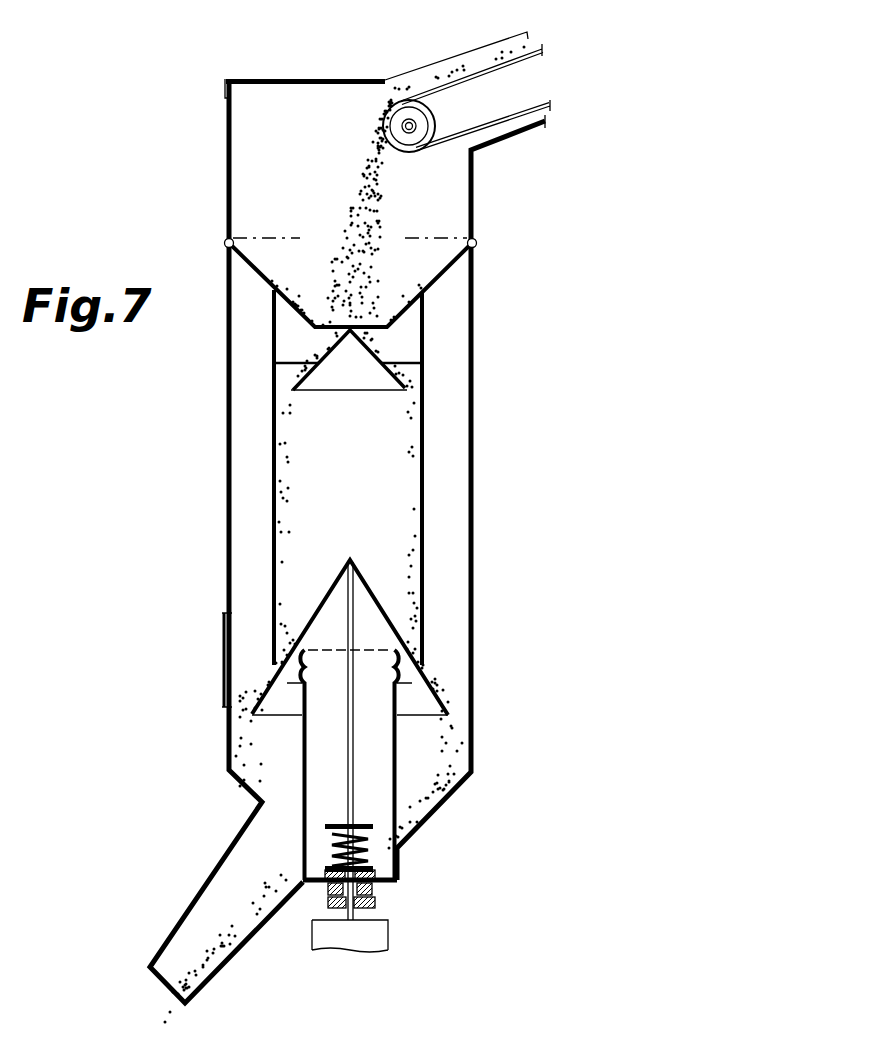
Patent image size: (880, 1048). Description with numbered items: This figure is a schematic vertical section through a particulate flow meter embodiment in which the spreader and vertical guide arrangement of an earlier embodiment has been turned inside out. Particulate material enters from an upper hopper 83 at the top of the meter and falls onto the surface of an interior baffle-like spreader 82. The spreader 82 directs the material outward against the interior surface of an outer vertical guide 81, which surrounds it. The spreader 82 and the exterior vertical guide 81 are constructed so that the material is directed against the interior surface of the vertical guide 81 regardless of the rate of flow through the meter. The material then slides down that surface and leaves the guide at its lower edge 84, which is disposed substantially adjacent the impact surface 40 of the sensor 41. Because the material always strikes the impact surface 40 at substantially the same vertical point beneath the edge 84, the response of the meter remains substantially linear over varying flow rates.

The impact surface 40 is at (432, 687).
The sensor 41 is at (398, 637).
The outer vertical guide 81 is at (427, 570).
The spreader 82 is at (322, 367).
The upper hopper 83 is at (437, 272).
The edge 84 is at (270, 677).